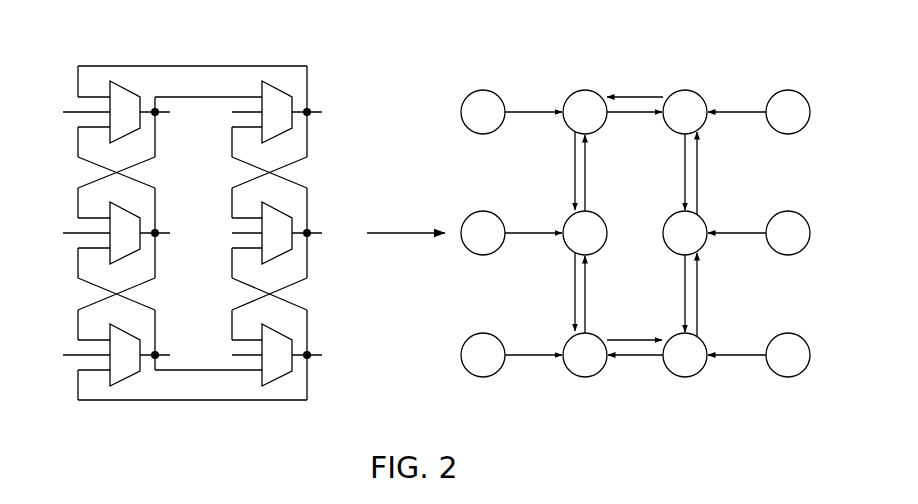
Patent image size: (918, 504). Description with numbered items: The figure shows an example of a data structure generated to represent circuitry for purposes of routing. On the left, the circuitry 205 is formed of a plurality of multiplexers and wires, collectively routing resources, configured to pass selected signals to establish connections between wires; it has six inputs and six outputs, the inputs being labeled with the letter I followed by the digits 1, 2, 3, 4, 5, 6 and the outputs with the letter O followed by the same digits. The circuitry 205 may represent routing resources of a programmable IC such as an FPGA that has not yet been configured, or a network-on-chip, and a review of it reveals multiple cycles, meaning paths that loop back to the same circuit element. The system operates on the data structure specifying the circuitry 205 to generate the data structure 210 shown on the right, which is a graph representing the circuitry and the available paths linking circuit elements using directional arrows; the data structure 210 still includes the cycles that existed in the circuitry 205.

The circuitry 205 is at (215, 41).
The data structure 210 is at (657, 41).
The input node I1 1 is at (483, 112).
The input node I2 2 is at (788, 112).
The input node I3 3 is at (483, 233).
The input node I4 4 is at (788, 233).
The input node I5 5 is at (483, 355).
The input node I6 6 is at (788, 355).